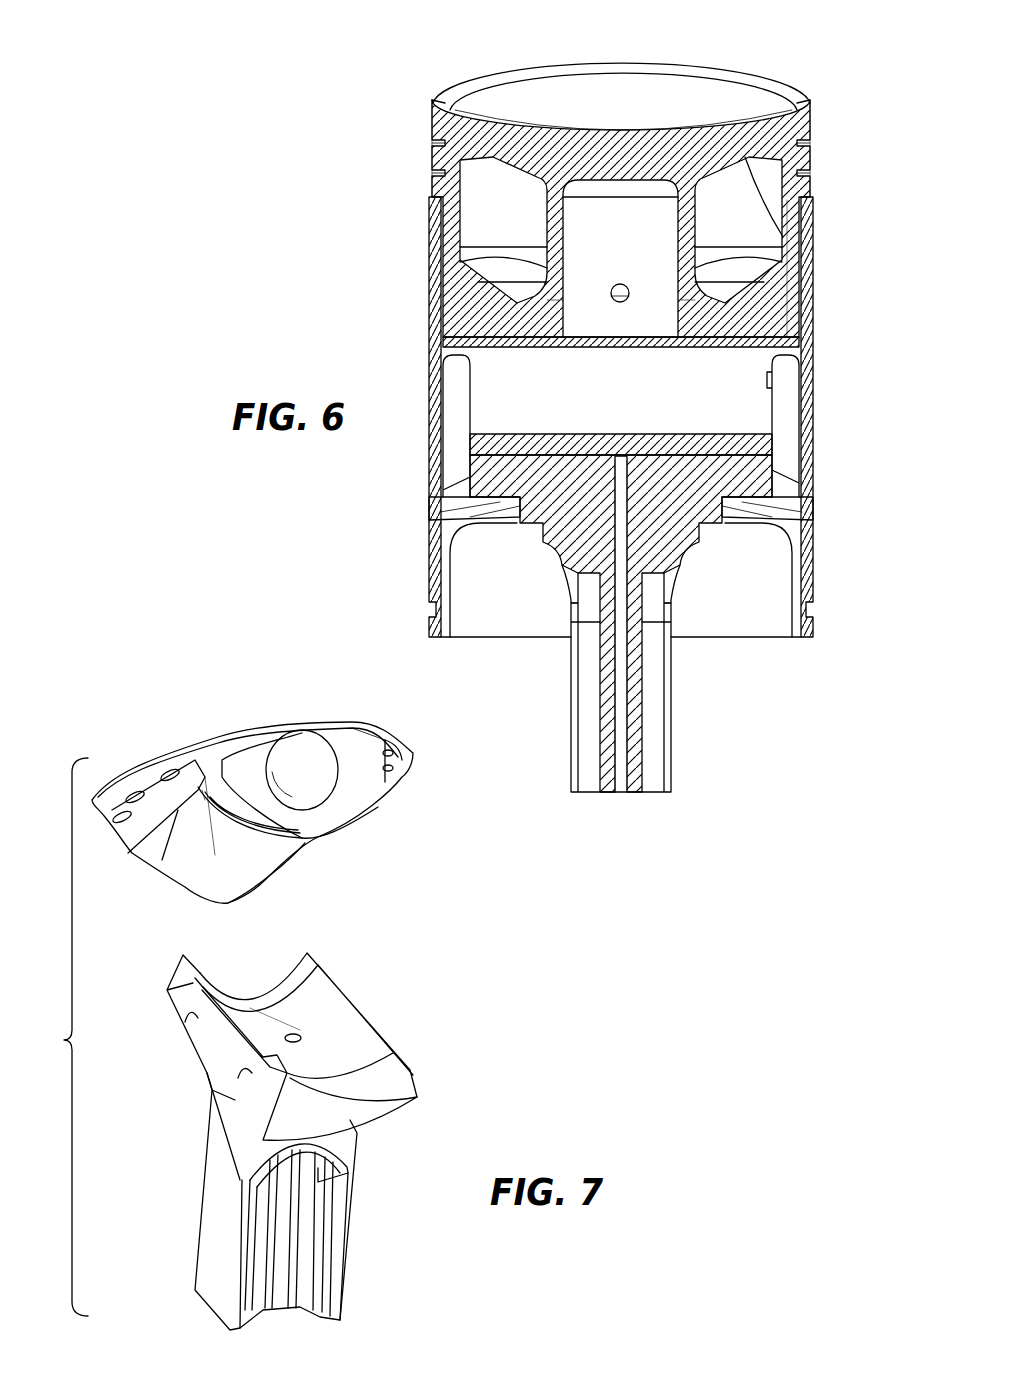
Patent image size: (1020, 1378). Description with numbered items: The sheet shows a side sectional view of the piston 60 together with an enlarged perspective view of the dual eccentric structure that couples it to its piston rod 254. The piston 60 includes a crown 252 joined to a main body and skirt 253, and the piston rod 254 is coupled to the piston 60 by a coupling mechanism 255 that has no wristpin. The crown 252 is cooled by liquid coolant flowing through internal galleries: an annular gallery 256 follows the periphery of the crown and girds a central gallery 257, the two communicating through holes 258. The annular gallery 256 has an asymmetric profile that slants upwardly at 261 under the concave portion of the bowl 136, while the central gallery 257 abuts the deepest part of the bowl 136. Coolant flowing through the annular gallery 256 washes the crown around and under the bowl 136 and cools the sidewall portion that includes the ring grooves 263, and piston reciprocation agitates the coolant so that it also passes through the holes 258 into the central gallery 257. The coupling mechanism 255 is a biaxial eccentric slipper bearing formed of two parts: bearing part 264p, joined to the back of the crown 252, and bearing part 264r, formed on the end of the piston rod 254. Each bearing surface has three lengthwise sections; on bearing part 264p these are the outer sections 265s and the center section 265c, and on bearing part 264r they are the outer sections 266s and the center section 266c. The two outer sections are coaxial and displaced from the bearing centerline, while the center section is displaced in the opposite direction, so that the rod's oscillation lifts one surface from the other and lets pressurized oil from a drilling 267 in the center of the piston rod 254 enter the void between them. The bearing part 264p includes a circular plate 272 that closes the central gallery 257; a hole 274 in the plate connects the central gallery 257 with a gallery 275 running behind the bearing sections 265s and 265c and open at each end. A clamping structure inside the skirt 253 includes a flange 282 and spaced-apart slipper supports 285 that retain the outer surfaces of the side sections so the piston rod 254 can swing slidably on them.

In FIG. 6, the piston 60 is at (838, 120).
In FIG. 6, the bowl 136 is at (713, 137).
In FIG. 6, the crown 252 is at (432, 157).
In FIG. 6, the main body and skirt 253 is at (432, 320).
In FIG. 6, the piston rod 254 is at (671, 728).
In FIG. 7, the piston rod 254 is at (350, 1240).
In FIG. 6, the coupling mechanism 255 is at (763, 342).
In FIG. 6, the annular gallery 256 is at (467, 212).
In FIG. 6, the central gallery 257 is at (642, 252).
In FIG. 6, the holes 258 is at (460, 263).
In FIG. 6, the upwardly slanting portion of annular gallery 261 is at (800, 245).
In FIG. 6, the ring grooves 263 is at (806, 145).
In FIG. 6, the bearing part 264p is at (763, 448).
In FIG. 7, the bearing part 264p is at (375, 815).
In FIG. 6, the bearing part 264r is at (765, 478).
In FIG. 7, the bearing part 264r is at (195, 1062).
In FIG. 7, the center section 265c is at (217, 855).
In FIG. 7, the outer sections 265s is at (320, 835).
In FIG. 7, the center section 266c is at (317, 1020).
In FIG. 7, the outer sections 266s is at (257, 990).
In FIG. 6, the drilling 267 is at (620, 752).
In FIG. 7, the drilling 267 is at (317, 1040).
In FIG. 7, the circular plate 272 is at (390, 735).
In FIG. 6, the hole 274 is at (630, 348).
In FIG. 6, the gallery 275 is at (760, 410).
In FIG. 7, the gallery 275 is at (290, 763).
In FIG. 6, the flange 282 is at (458, 512).
In FIG. 6, the slipper supports 285 is at (492, 510).